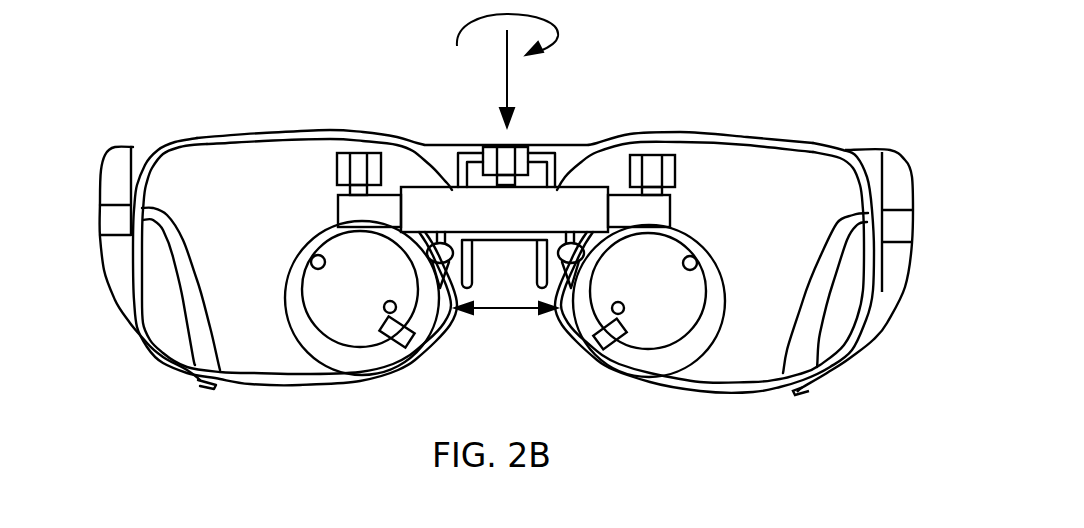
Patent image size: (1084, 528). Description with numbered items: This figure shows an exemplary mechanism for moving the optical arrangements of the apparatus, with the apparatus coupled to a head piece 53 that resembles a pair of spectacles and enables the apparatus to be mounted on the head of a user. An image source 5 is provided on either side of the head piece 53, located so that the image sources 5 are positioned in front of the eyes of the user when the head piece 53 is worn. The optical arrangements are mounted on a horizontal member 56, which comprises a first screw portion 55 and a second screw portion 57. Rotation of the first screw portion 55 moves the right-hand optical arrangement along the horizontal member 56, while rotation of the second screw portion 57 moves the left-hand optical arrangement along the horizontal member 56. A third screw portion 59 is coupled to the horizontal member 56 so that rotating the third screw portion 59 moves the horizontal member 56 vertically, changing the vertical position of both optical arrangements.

The image source 5 is at (362, 298).
The head piece 53 is at (882, 150).
The first screw portion 55 is at (653, 155).
The horizontal member 56 is at (537, 207).
The second screw portion 57 is at (357, 153).
The third screw portion 59 is at (512, 147).